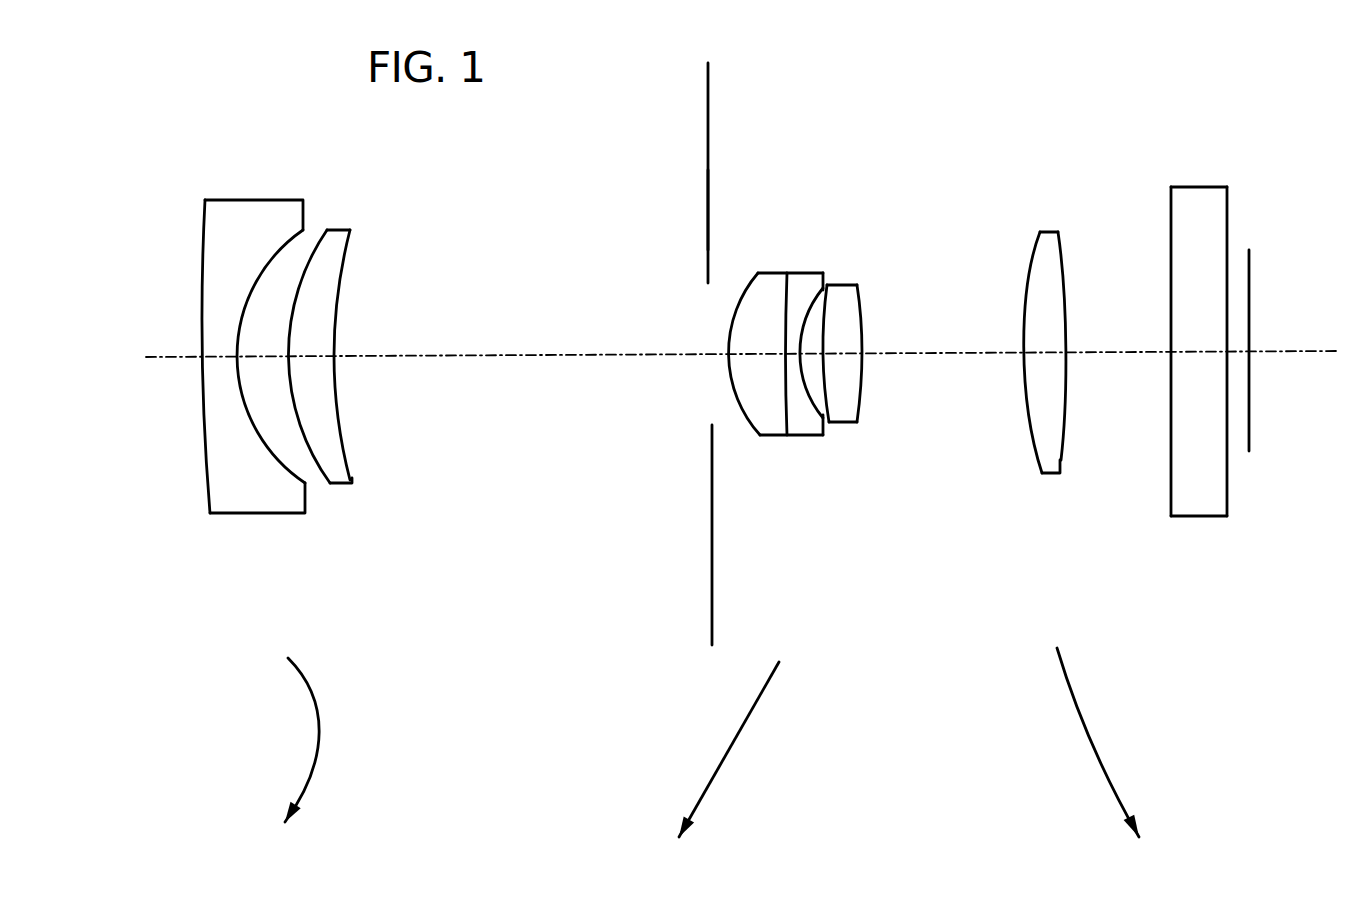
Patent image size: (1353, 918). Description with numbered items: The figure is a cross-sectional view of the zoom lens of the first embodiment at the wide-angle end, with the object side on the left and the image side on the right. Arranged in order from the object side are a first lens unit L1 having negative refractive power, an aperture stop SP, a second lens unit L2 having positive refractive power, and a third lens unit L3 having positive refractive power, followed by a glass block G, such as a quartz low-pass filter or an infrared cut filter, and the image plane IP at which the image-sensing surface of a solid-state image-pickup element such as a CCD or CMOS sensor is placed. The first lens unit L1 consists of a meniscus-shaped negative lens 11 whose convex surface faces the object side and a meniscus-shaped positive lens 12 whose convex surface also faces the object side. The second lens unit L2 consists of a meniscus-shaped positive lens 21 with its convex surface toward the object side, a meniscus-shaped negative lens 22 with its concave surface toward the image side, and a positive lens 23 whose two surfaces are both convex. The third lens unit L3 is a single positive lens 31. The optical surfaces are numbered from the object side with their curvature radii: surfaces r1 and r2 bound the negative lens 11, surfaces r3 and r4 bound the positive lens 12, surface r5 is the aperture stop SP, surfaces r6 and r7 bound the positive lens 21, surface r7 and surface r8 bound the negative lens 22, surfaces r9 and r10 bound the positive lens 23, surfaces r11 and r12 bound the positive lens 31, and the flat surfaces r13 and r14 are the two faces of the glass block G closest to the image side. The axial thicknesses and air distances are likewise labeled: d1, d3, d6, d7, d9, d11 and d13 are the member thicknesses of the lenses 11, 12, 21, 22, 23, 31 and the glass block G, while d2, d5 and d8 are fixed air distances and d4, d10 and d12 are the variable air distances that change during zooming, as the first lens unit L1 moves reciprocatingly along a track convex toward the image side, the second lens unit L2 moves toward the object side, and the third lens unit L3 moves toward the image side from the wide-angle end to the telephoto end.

The first lens unit L1 is at (409, 162).
The second lens unit L2 is at (914, 185).
The third lens unit L3 is at (978, 165).
The aperture stop SP is at (712, 100).
The glass block G is at (1204, 283).
The image plane IP is at (1252, 288).
The negative lens 11 is at (248, 405).
The positive lens 12 is at (342, 417).
The positive lens 21 is at (776, 380).
The negative lens 22 is at (816, 426).
The positive lens 23 is at (895, 402).
The positive lens 31 is at (1056, 404).
The curvature radius of first optical surface r1 is at (203, 215).
The curvature radius of second optical surface r2 is at (303, 199).
The curvature radius of third optical surface r3 is at (319, 237).
The curvature radius of fourth optical surface r4 is at (352, 232).
The fifth optical surface r5 is at (708, 213).
The curvature radius of sixth optical surface r6 is at (746, 290).
The curvature radius of seventh optical surface r7 is at (787, 307).
The curvature radius of eighth optical surface r8 is at (823, 272).
The curvature radius of ninth optical surface r9 is at (824, 320).
The curvature radius of tenth optical surface r10 is at (862, 325).
The curvature radius of eleventh optical surface r11 is at (1030, 253).
The curvature radius of twelfth optical surface r12 is at (1063, 255).
The curvature radius of thirteenth optical surface r13 is at (1168, 213).
The curvature radius of fourteenth optical surface r14 is at (1227, 223).
The member thickness between first and second surfaces d1 is at (214, 360).
The air distance between second and third surfaces d2 is at (268, 358).
The member thickness between third and fourth surfaces d3 is at (313, 358).
The air distance between fourth and fifth surfaces d4 is at (500, 360).
The air distance between fifth and sixth surfaces d5 is at (718, 360).
The member thickness between sixth and seventh surfaces d6 is at (758, 360).
The member thickness between seventh and eighth surfaces d7 is at (793, 358).
The air distance between eighth and ninth surfaces d8 is at (812, 360).
The member thickness between ninth and tenth surfaces d9 is at (846, 358).
The air distance between tenth and eleventh surfaces d10 is at (957, 357).
The member thickness between eleventh and twelfth surfaces d11 is at (1042, 353).
The air distance between twelfth and thirteenth surfaces d12 is at (1122, 355).
The member thickness between thirteenth and fourteenth surfaces d13 is at (1197, 352).